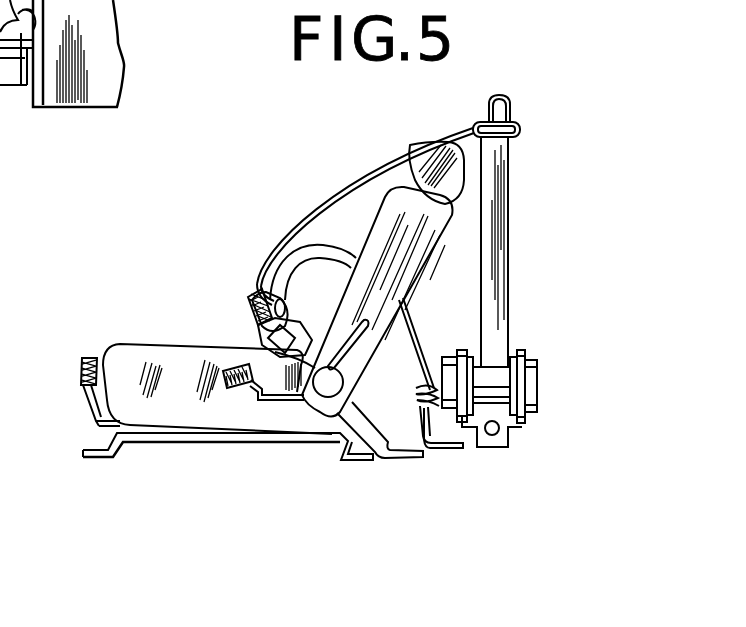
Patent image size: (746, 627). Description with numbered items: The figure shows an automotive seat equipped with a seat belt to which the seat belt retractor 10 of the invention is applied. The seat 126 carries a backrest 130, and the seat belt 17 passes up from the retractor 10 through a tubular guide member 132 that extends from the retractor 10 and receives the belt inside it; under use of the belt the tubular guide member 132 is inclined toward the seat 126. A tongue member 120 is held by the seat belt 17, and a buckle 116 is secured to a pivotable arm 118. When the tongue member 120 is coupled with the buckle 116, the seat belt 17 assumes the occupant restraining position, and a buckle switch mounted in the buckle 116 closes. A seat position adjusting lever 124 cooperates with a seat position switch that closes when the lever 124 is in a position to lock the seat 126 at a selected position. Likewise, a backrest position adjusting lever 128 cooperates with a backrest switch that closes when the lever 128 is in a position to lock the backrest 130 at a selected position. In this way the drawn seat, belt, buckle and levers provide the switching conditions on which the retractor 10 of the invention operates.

The retractor 10 is at (494, 370).
The seat belt 17 is at (378, 150).
The buckle 116 is at (302, 350).
The pivotable arm 118 is at (417, 373).
The tongue member 120 is at (288, 302).
The seat position adjusting lever 124 is at (82, 371).
The seat 126 is at (169, 362).
The backrest position adjusting lever 128 is at (238, 395).
The backrest 130 is at (413, 242).
The tubular guide member 132 is at (510, 195).